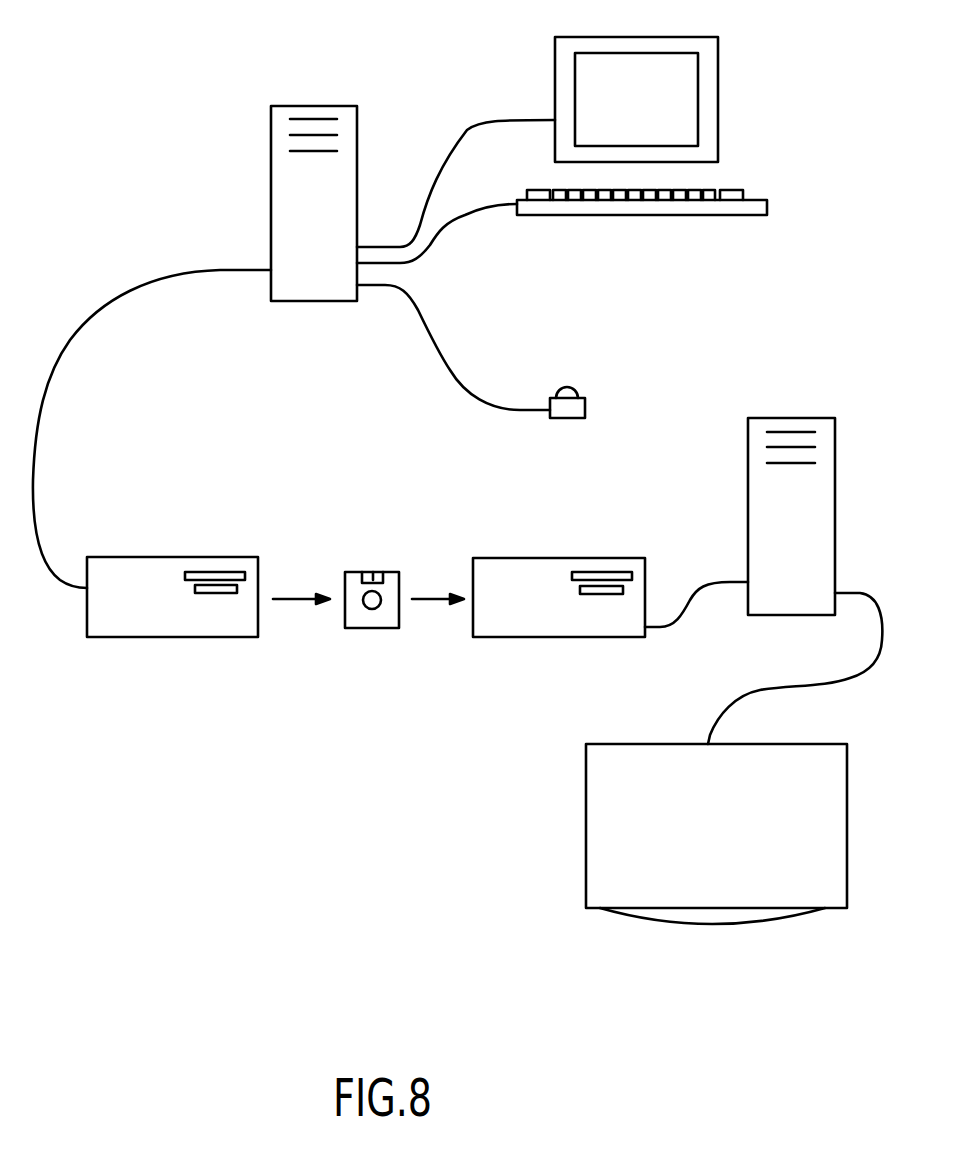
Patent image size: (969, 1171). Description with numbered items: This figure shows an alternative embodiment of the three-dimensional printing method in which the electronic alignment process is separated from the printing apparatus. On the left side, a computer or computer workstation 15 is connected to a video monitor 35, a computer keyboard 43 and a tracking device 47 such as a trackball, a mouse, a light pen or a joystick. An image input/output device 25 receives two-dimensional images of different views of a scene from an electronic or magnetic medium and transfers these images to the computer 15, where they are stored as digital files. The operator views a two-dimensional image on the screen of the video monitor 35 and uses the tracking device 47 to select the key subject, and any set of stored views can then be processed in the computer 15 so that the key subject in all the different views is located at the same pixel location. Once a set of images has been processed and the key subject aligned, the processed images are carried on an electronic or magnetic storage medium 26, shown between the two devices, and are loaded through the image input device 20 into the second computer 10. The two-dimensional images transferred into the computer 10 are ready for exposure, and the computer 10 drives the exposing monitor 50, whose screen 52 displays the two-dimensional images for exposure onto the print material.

The computer 10 is at (822, 442).
The computer 15 is at (348, 127).
The image input device 20 is at (518, 568).
The image input/output device 25 is at (133, 568).
The electronic or magnetic storage medium 26 is at (362, 626).
The video monitor 35 is at (711, 72).
The computer keyboard 43 is at (748, 214).
The tracking device 47 is at (575, 413).
The exposing monitor 50 is at (595, 863).
The screen 52 is at (738, 913).